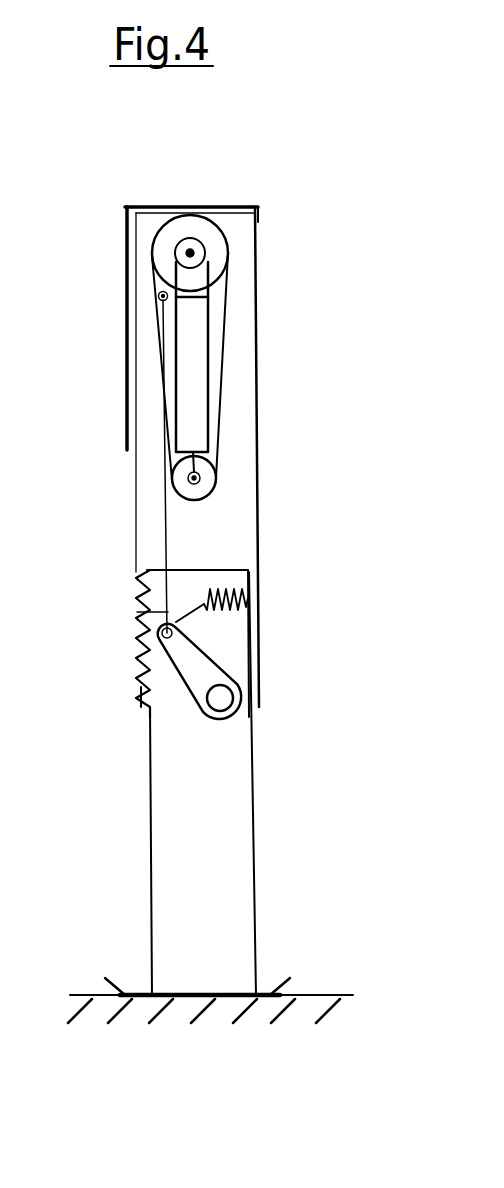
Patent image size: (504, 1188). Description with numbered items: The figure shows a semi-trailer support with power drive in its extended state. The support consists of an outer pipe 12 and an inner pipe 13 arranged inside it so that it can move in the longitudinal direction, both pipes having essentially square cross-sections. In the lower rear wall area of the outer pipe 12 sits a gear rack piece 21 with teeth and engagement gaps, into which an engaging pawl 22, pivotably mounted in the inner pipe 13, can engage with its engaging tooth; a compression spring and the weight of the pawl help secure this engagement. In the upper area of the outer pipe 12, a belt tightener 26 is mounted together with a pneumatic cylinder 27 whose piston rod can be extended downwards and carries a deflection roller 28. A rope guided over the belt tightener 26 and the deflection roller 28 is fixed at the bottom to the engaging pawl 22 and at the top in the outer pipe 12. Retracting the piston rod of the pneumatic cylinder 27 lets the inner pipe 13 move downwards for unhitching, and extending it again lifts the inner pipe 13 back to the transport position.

The outer pipe 12 is at (257, 425).
The inner pipe 13 is at (254, 797).
The gear rack piece 21 is at (137, 643).
The engaging pawl 22 is at (190, 655).
The belt tightener 26 is at (214, 254).
The pneumatic cylinder 27 is at (192, 362).
The deflection roller 28 is at (200, 489).